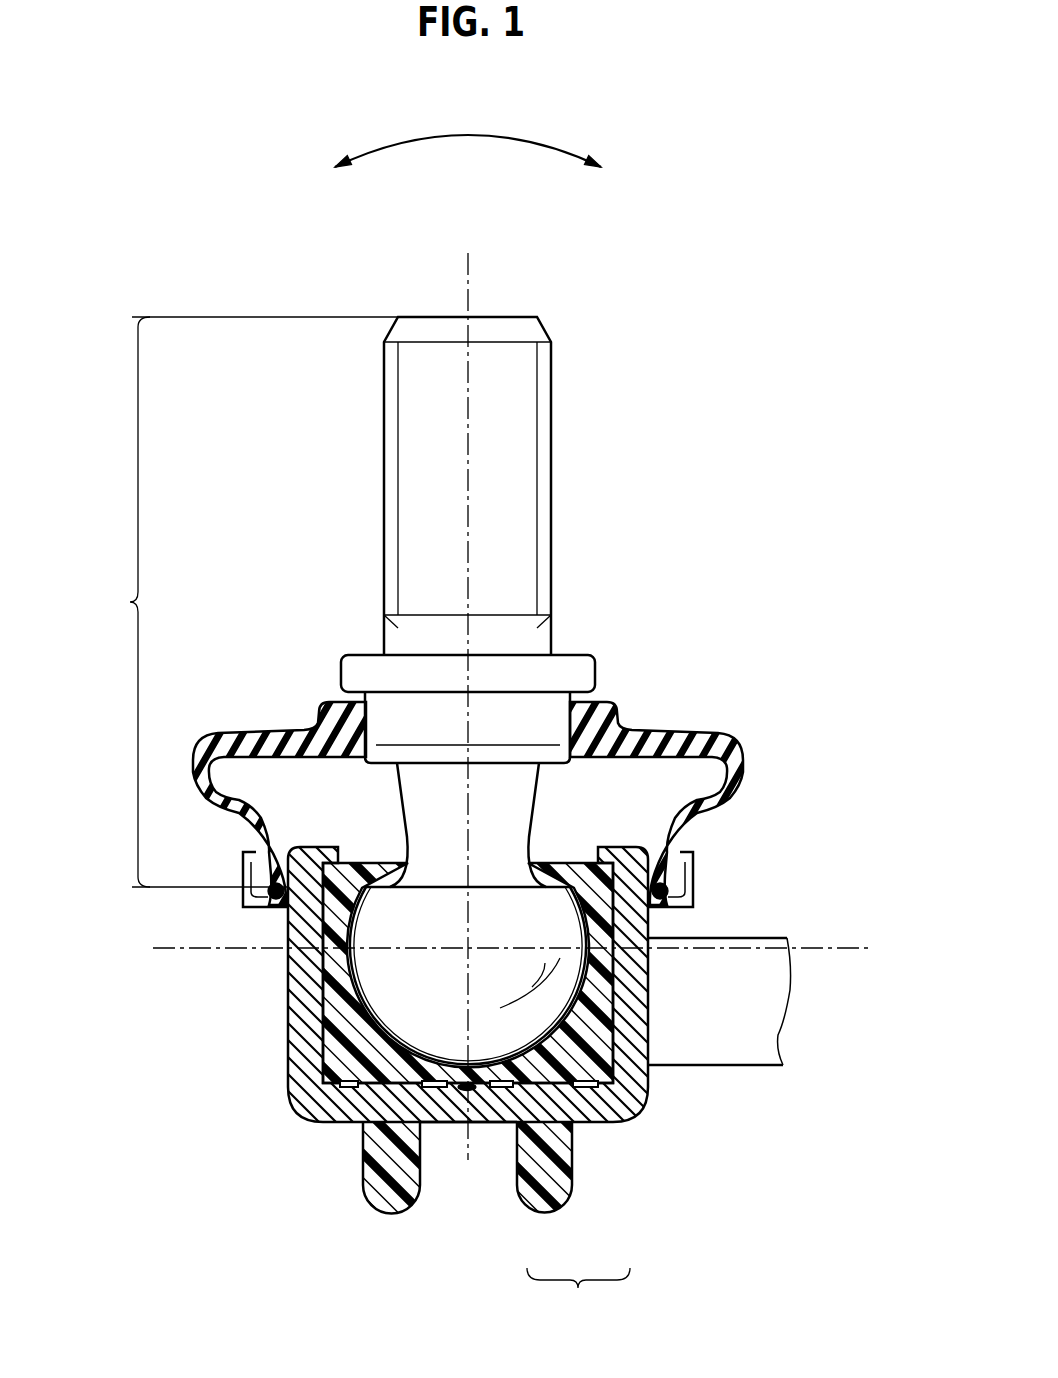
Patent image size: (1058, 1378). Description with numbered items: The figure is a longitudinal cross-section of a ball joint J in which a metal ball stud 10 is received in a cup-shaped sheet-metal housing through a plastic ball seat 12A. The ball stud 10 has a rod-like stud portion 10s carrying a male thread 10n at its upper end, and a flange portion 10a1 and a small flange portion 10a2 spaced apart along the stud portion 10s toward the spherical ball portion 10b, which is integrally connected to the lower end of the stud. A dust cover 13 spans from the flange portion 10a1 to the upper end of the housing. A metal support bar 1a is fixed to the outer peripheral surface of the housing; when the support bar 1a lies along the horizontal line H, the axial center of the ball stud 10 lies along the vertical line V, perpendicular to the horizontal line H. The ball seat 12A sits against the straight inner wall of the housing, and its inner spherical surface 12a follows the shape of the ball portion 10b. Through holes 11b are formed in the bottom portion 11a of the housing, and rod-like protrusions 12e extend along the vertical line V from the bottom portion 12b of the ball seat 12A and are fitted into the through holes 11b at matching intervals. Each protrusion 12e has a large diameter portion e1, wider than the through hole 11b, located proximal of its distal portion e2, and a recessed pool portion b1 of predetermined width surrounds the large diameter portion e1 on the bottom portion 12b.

The support bar 1a is at (722, 1067).
The ball stud 10 is at (489, 740).
The flange portion 10a1 is at (595, 673).
The small flange portion 10a2 is at (430, 757).
The ball portion 10b is at (498, 1003).
The male thread 10n is at (552, 390).
The stud portion 10s is at (236, 602).
The bottom portion 11a is at (478, 1112).
The through hole 11b is at (373, 1123).
The ball seat 12A is at (332, 965).
The inner spherical surface 12a is at (325, 992).
The bottom portion 12b is at (466, 1087).
The protrusion 12e is at (578, 1294).
The dust cover 13 is at (742, 767).
The horizontal line H is at (828, 947).
The ball joint J is at (263, 1055).
The vertical line V is at (467, 278).
The pool portion b1 is at (345, 1087).
The large diameter portion e1 is at (537, 1110).
The distal portion e2 is at (393, 1197).